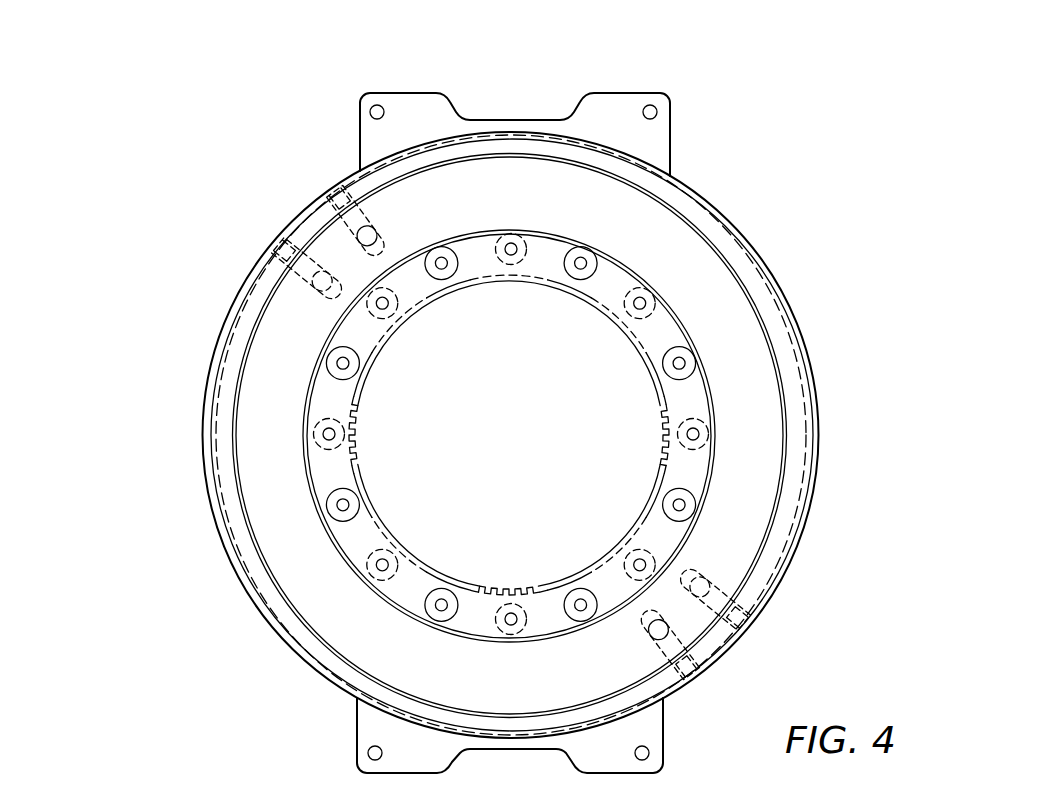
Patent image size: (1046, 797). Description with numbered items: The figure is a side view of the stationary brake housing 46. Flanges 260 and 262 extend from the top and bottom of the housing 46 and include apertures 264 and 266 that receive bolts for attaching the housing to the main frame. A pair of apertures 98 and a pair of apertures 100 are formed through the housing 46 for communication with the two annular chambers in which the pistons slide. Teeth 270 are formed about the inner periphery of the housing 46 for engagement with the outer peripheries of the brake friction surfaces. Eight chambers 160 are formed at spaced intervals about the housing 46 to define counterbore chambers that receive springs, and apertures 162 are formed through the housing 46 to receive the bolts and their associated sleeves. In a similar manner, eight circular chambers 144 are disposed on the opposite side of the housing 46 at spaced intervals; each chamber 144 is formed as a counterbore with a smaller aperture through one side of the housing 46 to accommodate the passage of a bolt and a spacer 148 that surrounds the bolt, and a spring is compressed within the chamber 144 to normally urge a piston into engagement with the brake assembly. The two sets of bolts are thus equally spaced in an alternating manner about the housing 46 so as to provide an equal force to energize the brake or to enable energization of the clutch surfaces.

The housing 46 is at (828, 285).
The apertures 98 is at (262, 252).
The apertures 100 is at (345, 185).
The circular chambers 144 is at (513, 262).
The spacer 148 is at (511, 250).
The chambers 160 is at (452, 249).
The apertures 162 is at (441, 262).
The flange 260 is at (622, 104).
The flange 262 is at (653, 726).
The apertures 264 is at (657, 112).
The apertures 266 is at (650, 753).
The teeth 270 is at (362, 460).